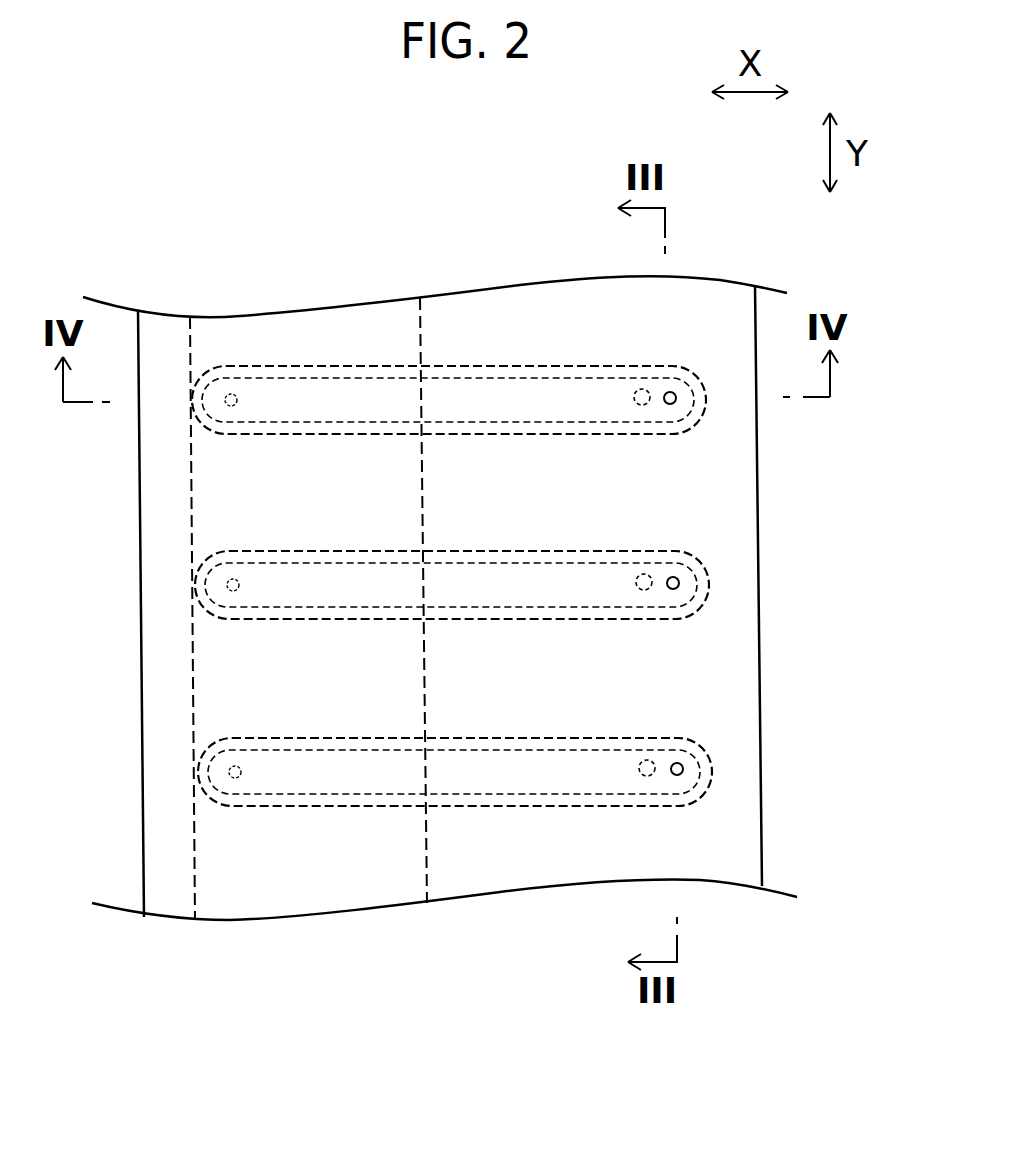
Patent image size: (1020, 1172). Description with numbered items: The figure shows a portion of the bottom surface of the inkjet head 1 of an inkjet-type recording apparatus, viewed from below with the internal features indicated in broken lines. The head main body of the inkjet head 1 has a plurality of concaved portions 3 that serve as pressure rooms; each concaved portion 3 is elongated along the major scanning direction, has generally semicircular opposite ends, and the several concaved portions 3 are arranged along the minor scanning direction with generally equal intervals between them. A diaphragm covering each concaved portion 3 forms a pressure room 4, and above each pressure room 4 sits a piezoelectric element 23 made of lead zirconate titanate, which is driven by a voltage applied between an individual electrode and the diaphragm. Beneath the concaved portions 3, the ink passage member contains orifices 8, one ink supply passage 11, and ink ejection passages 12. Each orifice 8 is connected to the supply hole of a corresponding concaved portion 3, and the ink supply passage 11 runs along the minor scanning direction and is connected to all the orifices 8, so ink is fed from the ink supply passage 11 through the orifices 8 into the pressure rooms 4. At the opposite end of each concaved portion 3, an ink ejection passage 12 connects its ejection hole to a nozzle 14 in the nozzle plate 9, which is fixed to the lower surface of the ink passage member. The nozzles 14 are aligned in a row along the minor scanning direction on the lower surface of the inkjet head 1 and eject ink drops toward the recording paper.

The inkjet head 1 is at (156, 160).
The concaved portion 3 is at (398, 424).
The pressure room 4 is at (515, 370).
The orifice 8 is at (231, 407).
The nozzle plate 9 is at (158, 823).
The ink supply passage 11 is at (419, 327).
The ink ejection passage 12 is at (645, 405).
The nozzle 14 is at (670, 404).
The piezoelectric element 23 is at (313, 377).